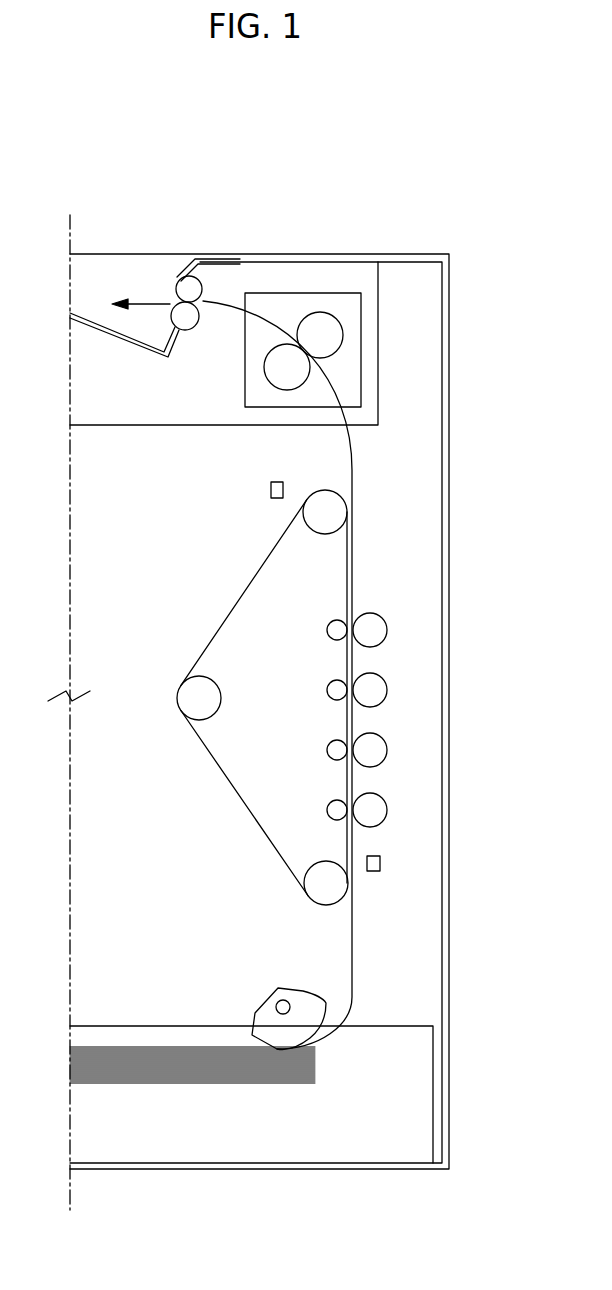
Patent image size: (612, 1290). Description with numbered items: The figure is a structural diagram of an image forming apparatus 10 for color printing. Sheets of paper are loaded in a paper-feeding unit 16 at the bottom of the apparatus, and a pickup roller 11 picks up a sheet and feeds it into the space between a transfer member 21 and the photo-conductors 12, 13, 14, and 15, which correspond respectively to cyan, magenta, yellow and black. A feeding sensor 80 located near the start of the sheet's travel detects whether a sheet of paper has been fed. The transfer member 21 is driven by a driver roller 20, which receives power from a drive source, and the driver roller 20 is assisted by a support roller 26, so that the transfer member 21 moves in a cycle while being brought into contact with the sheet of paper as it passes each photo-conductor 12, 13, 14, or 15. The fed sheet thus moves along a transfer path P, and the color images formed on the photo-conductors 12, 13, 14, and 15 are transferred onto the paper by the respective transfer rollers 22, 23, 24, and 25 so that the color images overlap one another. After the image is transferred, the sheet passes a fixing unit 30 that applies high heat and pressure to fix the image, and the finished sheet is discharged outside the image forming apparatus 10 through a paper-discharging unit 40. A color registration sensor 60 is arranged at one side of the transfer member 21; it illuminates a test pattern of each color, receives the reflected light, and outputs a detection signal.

The image forming apparatus 10 is at (473, 130).
The pickup roller 11 is at (262, 1020).
The photo-conductor 12 is at (372, 810).
The photo-conductor 13 is at (372, 750).
The photo-conductor 14 is at (372, 690).
The photo-conductor 15 is at (372, 630).
The paper-feeding unit 16 is at (412, 1098).
The driver roller 20 is at (324, 498).
The transfer member 21 is at (243, 588).
The transfer roller 22 is at (327, 810).
The transfer roller 23 is at (327, 750).
The transfer roller 24 is at (327, 690).
The transfer roller 25 is at (327, 630).
The support roller 26 is at (188, 703).
The fixing unit 30 is at (374, 337).
The paper-discharging unit 40 is at (206, 262).
The color registration sensor 60 is at (270, 490).
The feeding sensor 80 is at (381, 862).
The transfer path P is at (353, 443).